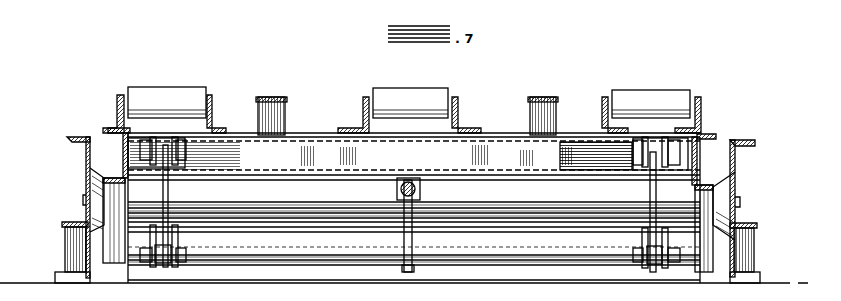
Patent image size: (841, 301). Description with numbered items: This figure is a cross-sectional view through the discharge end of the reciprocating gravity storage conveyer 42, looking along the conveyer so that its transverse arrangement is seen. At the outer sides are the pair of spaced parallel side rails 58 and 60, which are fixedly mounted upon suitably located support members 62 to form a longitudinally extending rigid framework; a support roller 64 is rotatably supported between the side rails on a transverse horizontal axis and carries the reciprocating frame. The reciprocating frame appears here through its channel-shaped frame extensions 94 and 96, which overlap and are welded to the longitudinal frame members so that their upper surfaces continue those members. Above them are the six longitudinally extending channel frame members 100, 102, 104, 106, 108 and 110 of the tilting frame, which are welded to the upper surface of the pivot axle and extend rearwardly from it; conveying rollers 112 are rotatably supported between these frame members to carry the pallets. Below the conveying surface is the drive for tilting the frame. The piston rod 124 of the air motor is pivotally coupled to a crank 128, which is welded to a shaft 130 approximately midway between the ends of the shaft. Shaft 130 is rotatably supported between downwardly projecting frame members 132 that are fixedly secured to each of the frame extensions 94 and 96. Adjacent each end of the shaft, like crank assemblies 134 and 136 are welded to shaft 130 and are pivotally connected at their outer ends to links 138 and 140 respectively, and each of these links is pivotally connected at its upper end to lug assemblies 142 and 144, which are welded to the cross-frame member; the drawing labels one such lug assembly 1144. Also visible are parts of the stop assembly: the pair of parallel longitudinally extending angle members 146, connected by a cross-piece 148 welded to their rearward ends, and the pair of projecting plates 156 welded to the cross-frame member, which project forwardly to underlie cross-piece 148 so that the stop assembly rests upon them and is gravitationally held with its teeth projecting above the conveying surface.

The storage conveyer 42 is at (719, 85).
The side rail 58 is at (85, 160).
The side rail 60 is at (737, 172).
The support member 62 is at (66, 246).
The support roller 64 is at (343, 202).
The frame extension 94 is at (124, 150).
The frame extension 96 is at (705, 147).
The channel frame member 100 is at (118, 96).
The channel frame member 102 is at (213, 106).
The channel frame member 104 is at (365, 108).
The channel frame member 106 is at (460, 119).
The channel frame member 108 is at (603, 107).
The channel frame member 110 is at (702, 108).
The conveying roller 112 is at (173, 90).
The piston rod 124 is at (406, 203).
The crank 128 is at (418, 225).
The shaft 130 is at (503, 247).
The frame member 132 is at (109, 254).
The crank assembly 134 is at (174, 268).
The crank assembly 136 is at (665, 268).
The link 138 is at (170, 195).
The link 140 is at (657, 200).
The lug assembly 142 is at (180, 160).
The lug assembly 144 is at (647, 170).
The angle member 146 is at (278, 97).
The cross-piece 148 is at (444, 167).
The projecting plate 156 is at (232, 133).
The upper bearing member 1144 is at (589, 170).